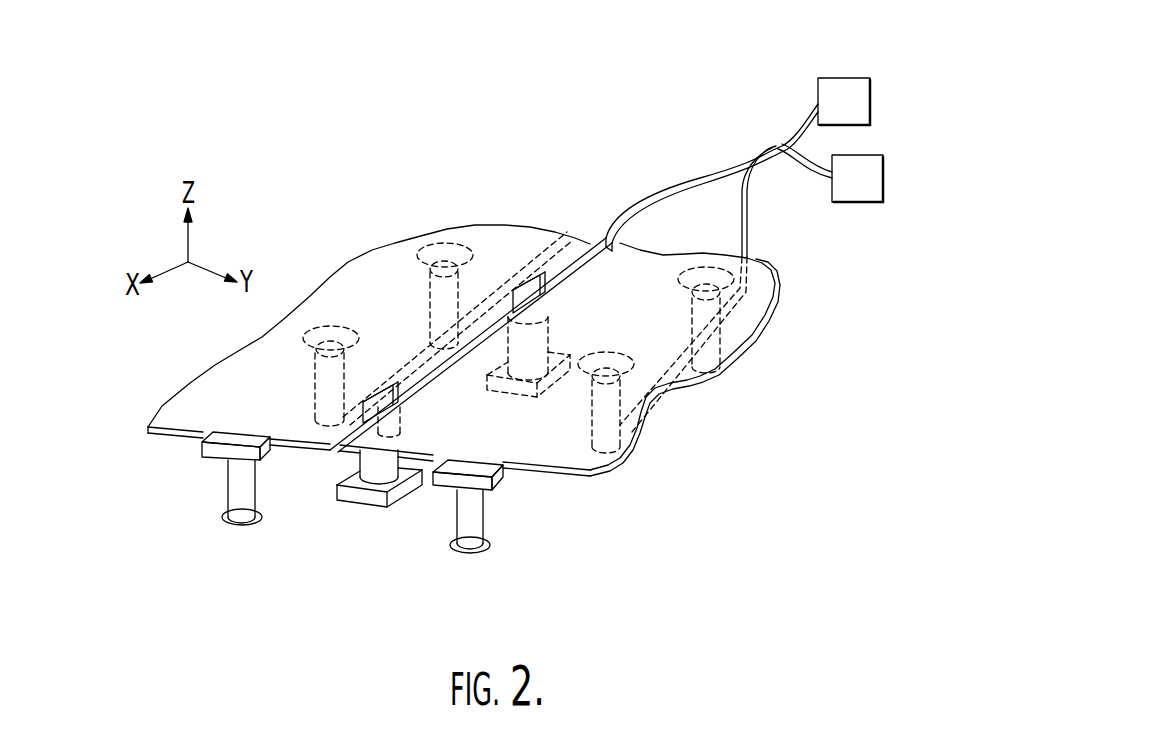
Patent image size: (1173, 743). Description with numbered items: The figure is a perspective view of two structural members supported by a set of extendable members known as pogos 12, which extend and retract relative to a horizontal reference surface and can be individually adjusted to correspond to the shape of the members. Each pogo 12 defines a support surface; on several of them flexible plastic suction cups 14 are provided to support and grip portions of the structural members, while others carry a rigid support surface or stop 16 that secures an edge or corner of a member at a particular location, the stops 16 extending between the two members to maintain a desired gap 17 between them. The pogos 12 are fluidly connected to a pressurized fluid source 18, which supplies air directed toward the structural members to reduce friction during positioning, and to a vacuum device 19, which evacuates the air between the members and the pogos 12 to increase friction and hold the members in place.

The pogo 12 is at (243, 503).
The suction cup 14 is at (423, 258).
The stop 16 is at (523, 284).
The gap 17 is at (586, 248).
The pressurized fluid source 18 is at (842, 78).
The vacuum device 19 is at (865, 203).